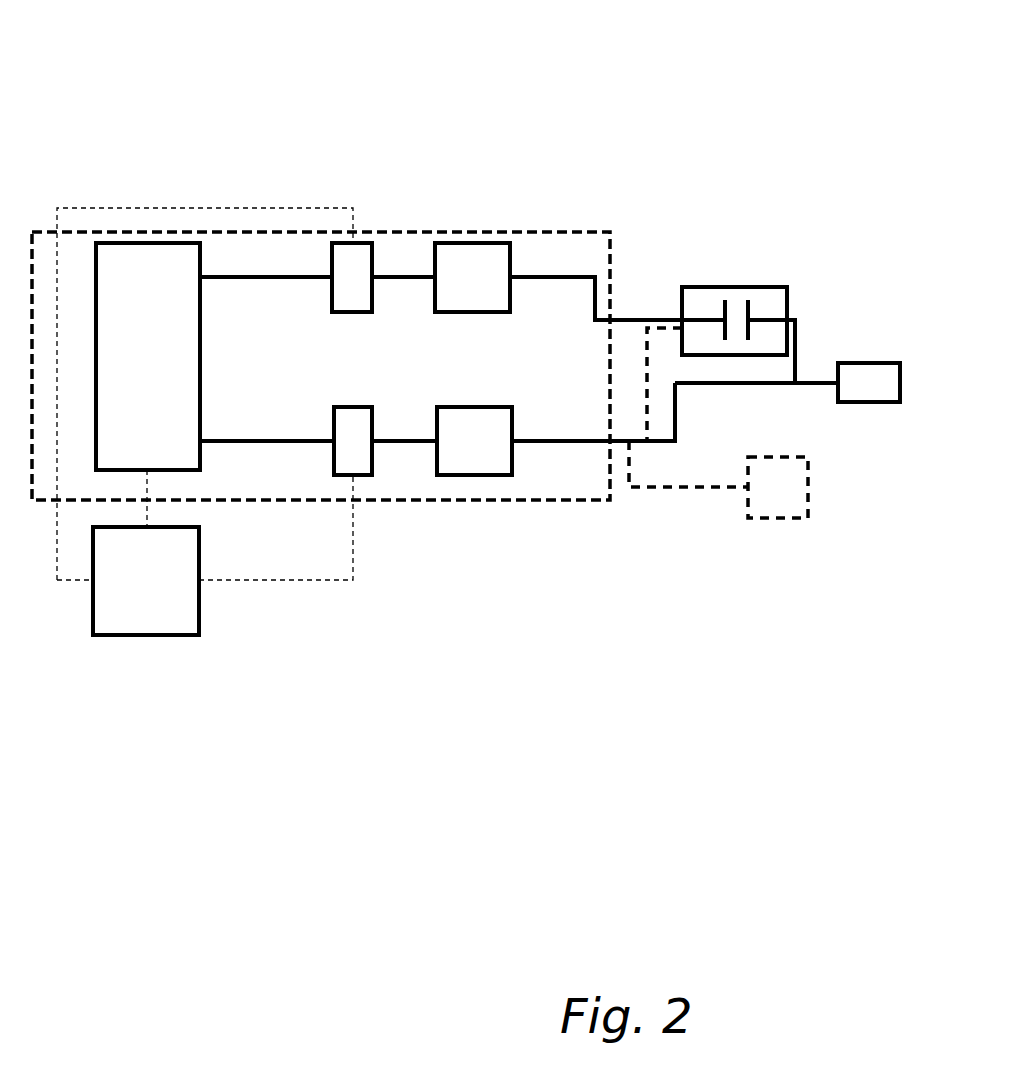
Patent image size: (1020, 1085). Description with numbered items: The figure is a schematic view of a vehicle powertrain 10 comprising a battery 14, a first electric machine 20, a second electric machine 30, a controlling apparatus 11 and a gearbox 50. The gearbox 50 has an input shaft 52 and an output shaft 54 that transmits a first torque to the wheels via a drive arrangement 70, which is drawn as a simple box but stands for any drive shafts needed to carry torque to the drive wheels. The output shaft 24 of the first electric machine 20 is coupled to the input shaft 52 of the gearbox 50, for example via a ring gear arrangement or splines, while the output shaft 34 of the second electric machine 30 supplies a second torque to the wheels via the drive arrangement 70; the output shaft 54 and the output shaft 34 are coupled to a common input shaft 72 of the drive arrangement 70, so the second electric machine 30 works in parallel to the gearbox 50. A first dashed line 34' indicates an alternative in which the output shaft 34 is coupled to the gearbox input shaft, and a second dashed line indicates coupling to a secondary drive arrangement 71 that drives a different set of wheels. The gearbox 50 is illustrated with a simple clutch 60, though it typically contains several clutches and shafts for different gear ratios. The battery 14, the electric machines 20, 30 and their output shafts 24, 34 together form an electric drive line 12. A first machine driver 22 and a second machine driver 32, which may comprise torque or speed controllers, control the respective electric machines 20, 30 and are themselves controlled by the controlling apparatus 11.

The powertrain 10 is at (585, 101).
The controlling apparatus 11 is at (112, 638).
The electric drive line 12 is at (410, 502).
The battery 14 is at (145, 242).
The first electric machine 20 is at (460, 238).
The first machine driver 22 is at (368, 240).
The output shaft of the first electric machine 24 is at (537, 275).
The second electric machine 30 is at (472, 475).
The second machine driver 32 is at (357, 475).
The output shaft of the second electric machine 34 is at (593, 459).
The first dashed line 34' is at (617, 384).
The gearbox 50 is at (782, 300).
The input shaft 52 is at (612, 318).
The output shaft 54 is at (797, 350).
The clutch 60 is at (734, 306).
The drive arrangement 70 is at (858, 403).
The secondary drive arrangement 71 is at (787, 518).
The common input shaft 72 is at (810, 385).